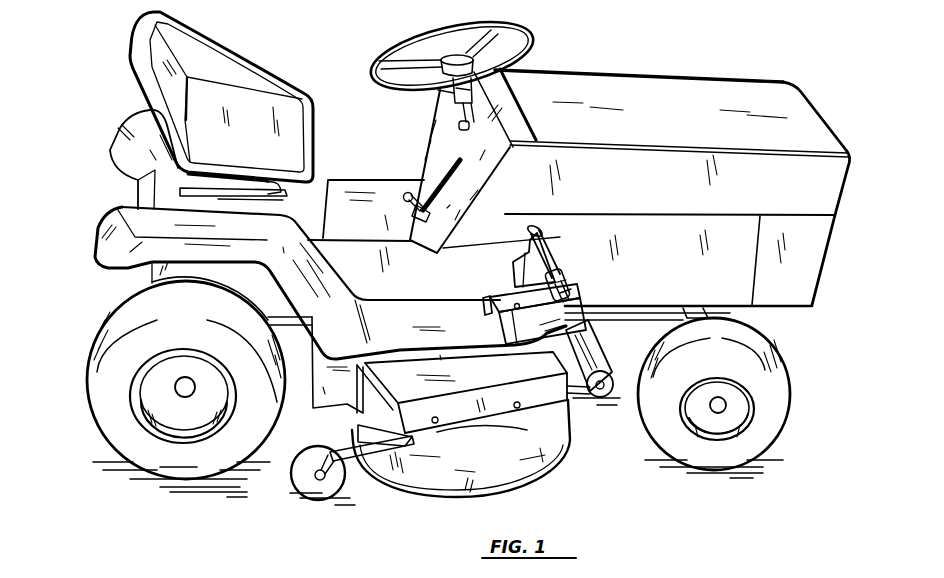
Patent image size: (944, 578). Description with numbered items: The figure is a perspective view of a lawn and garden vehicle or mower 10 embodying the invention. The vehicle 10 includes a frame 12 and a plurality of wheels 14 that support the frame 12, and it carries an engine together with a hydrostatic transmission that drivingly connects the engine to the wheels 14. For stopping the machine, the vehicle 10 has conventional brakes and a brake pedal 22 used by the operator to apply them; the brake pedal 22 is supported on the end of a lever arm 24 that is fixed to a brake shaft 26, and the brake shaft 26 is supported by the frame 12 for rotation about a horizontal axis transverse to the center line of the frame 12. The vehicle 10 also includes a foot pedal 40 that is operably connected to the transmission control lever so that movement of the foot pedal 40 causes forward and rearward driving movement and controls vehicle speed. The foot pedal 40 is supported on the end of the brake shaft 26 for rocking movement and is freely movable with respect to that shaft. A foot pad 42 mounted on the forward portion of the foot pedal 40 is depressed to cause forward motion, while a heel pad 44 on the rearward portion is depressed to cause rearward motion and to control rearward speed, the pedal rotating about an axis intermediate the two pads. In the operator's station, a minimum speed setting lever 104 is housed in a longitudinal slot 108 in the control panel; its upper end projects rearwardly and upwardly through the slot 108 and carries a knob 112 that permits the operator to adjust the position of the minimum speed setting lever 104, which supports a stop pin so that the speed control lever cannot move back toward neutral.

The lawn and garden vehicle 10 is at (597, 60).
The frame 12 is at (357, 197).
The wheels 14 is at (93, 430).
The brake pedal 22 is at (548, 250).
The lever arm 24 is at (548, 228).
The brake shaft 26 is at (502, 320).
The foot pedal 40 is at (510, 288).
The foot pad 42 is at (570, 285).
The heel pad 44 is at (488, 299).
The minimum speed setting lever 104 is at (421, 213).
The longitudinal slot 108 is at (430, 176).
The knob 112 is at (405, 201).